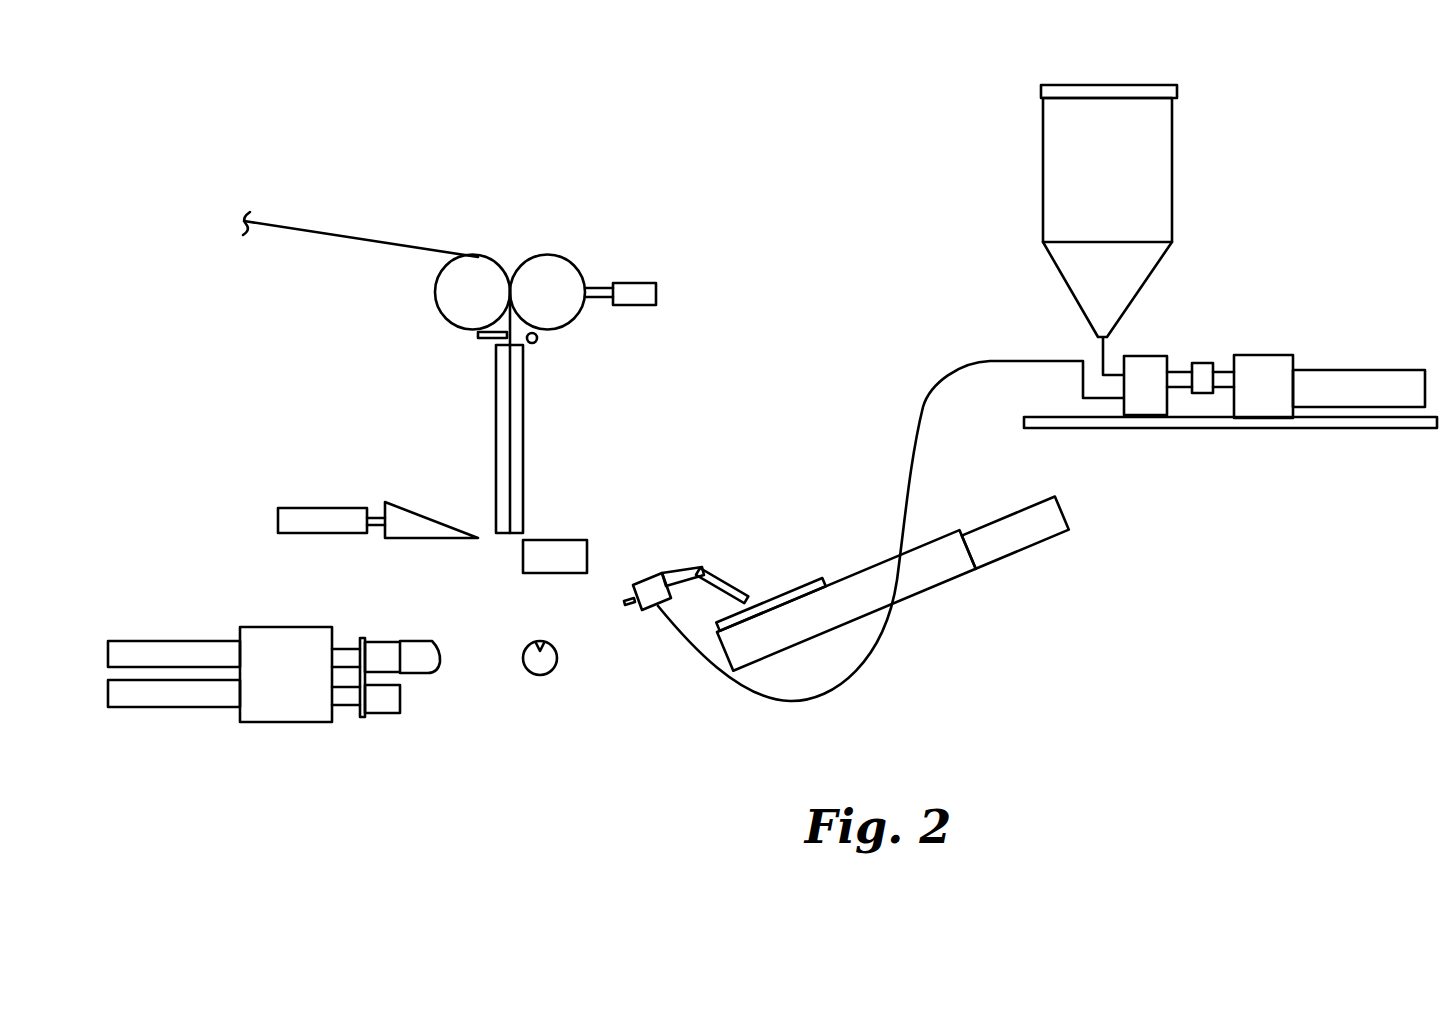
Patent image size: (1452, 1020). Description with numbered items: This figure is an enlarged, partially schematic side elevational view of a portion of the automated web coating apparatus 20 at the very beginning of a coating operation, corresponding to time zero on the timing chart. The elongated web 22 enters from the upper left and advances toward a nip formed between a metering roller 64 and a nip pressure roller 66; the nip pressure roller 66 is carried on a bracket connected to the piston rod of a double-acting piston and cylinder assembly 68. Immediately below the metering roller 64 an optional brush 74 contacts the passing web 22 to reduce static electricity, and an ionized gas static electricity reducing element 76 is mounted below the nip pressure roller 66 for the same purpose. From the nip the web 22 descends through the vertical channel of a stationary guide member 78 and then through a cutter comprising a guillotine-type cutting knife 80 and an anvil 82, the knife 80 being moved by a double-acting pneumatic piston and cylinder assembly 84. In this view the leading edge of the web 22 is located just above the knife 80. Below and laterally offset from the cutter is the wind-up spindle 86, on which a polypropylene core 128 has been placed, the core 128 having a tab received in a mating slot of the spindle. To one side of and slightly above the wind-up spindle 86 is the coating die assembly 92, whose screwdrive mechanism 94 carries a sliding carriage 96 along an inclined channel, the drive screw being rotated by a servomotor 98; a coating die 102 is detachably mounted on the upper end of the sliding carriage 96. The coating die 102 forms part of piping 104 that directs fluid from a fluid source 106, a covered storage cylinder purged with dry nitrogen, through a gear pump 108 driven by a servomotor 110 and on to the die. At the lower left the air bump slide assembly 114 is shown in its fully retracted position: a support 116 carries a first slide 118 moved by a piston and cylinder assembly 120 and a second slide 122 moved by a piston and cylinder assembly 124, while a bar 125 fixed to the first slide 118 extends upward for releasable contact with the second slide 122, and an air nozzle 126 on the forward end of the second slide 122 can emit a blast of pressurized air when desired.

The web coating apparatus 20 is at (1036, 626).
The web 22 is at (355, 236).
The metering roller 64 is at (435, 294).
The nip pressure roller 66 is at (556, 255).
The piston and cylinder assembly 68 is at (636, 283).
The brush 74 is at (487, 340).
The static electricity reducing element 76 is at (538, 341).
The guide member 78 is at (524, 414).
The cutting knife 80 is at (423, 511).
The anvil 82 is at (565, 540).
The piston and cylinder assembly 84 is at (338, 507).
The wind-up spindle 86 is at (568, 639).
The core 128 is at (540, 648).
The air bump slide assembly 114 is at (284, 610).
The support 116 is at (282, 723).
The first slide 118 is at (396, 714).
The piston and cylinder assembly 120 is at (138, 695).
The second slide 122 is at (384, 641).
The piston and cylinder assembly 124 is at (133, 648).
The bar 125 is at (361, 638).
The air nozzle 126 is at (441, 672).
The coating die assembly 92 is at (727, 534).
The screwdrive mechanism 94 is at (931, 594).
The sliding carriage 96 is at (747, 594).
The servomotor 98 is at (1048, 538).
The coating die 102 is at (643, 579).
The piping 104 is at (846, 688).
The fluid source 106 is at (1175, 152).
The pump 108 is at (1154, 355).
The servomotor 110 is at (1357, 369).